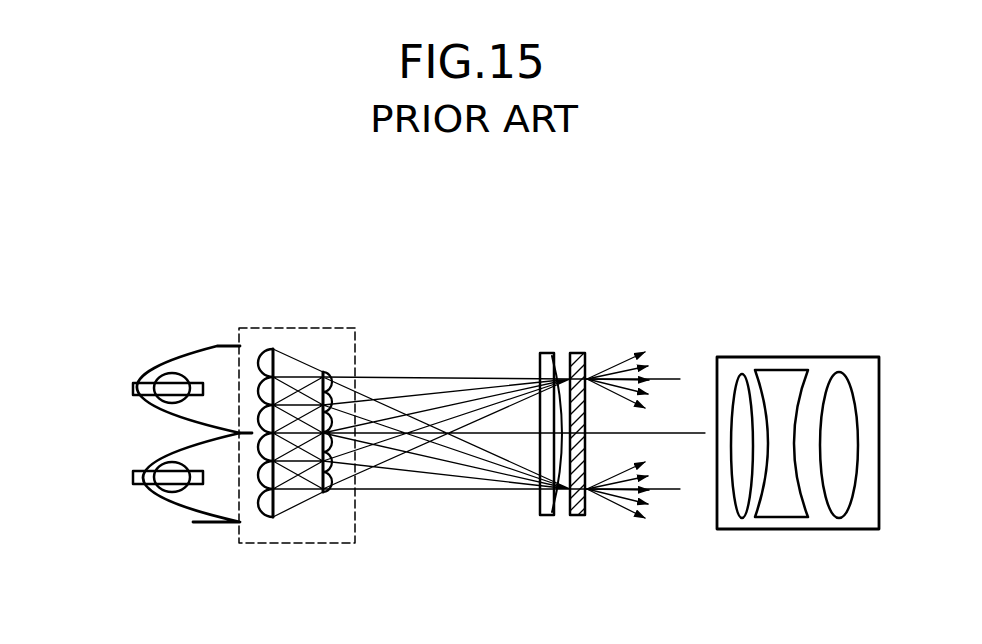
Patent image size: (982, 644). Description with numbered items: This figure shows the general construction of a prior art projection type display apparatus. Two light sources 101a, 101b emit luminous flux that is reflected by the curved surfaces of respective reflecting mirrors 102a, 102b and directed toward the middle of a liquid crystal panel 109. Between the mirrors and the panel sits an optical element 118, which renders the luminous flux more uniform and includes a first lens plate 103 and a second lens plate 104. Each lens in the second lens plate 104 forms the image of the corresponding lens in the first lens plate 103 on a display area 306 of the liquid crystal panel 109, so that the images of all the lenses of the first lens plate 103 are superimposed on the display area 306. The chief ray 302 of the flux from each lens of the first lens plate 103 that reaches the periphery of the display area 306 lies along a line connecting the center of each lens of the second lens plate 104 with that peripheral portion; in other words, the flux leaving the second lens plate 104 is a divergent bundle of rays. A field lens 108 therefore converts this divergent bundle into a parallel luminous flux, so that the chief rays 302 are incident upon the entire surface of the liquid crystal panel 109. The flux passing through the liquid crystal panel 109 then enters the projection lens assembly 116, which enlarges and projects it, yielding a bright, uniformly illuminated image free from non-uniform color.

The light source 101a is at (134, 383).
The light source 101b is at (138, 486).
The reflecting mirror 102a is at (218, 345).
The reflecting mirror 102b is at (193, 523).
The first lens plate 103 is at (273, 349).
The second lens plate 104 is at (324, 372).
The optical element 118 is at (323, 328).
The chief ray 302 is at (457, 377).
The field lens 108 is at (546, 353).
The liquid crystal panel 109 is at (582, 353).
The display area 306 is at (586, 463).
The projection lens assembly 116 is at (806, 357).